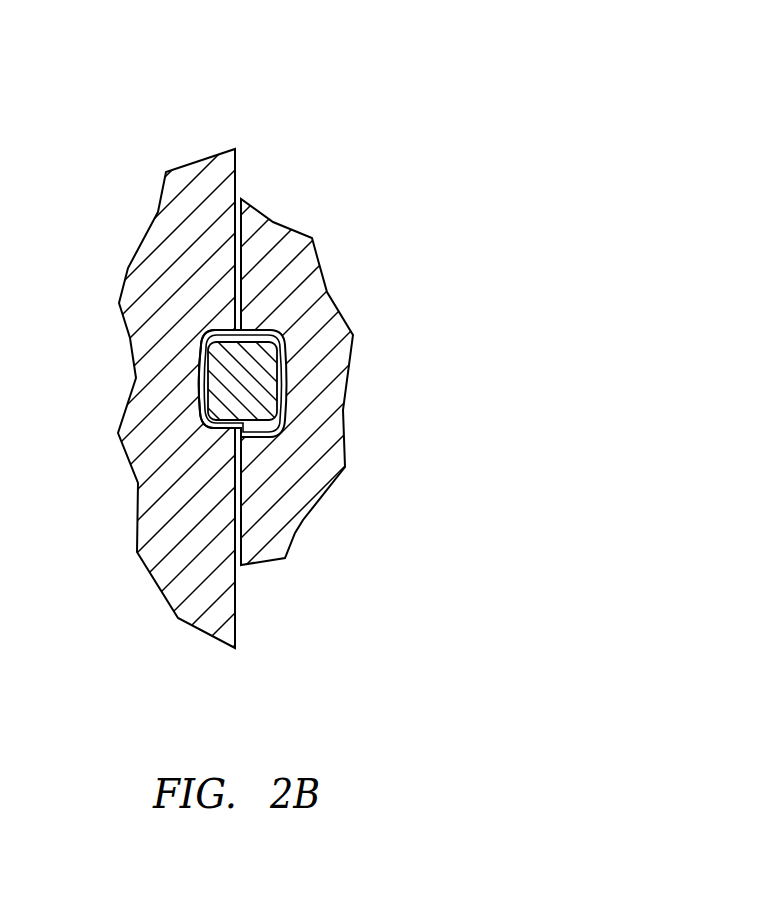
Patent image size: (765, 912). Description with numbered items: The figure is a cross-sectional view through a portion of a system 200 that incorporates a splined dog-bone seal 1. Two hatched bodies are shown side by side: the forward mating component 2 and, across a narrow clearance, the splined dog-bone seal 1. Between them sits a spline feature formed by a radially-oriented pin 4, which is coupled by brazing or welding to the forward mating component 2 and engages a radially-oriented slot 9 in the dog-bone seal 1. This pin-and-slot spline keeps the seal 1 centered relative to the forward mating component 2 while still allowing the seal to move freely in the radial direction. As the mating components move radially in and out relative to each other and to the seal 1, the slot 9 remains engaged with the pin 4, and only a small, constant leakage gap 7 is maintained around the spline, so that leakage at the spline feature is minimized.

The system 200 is at (370, 334).
The splined dog-bone seal 1 is at (322, 249).
The forward mating component 2 is at (130, 483).
The radially-oriented pin 4 is at (190, 353).
The leakage gap 7 is at (283, 403).
The slot 9 is at (255, 367).